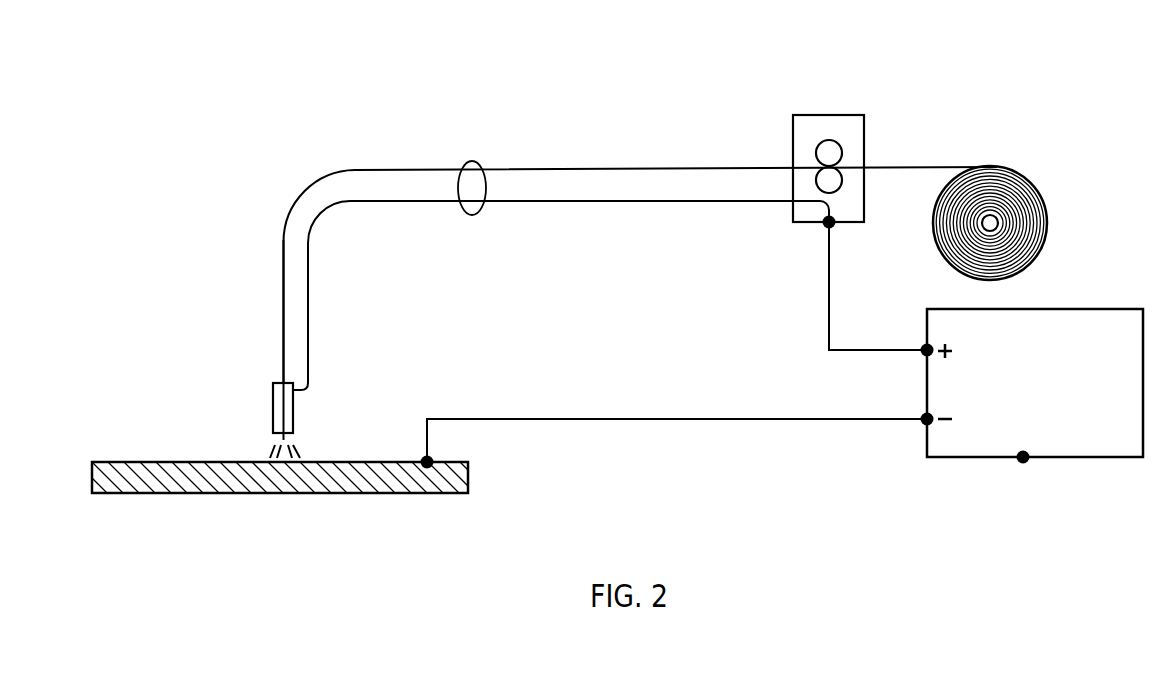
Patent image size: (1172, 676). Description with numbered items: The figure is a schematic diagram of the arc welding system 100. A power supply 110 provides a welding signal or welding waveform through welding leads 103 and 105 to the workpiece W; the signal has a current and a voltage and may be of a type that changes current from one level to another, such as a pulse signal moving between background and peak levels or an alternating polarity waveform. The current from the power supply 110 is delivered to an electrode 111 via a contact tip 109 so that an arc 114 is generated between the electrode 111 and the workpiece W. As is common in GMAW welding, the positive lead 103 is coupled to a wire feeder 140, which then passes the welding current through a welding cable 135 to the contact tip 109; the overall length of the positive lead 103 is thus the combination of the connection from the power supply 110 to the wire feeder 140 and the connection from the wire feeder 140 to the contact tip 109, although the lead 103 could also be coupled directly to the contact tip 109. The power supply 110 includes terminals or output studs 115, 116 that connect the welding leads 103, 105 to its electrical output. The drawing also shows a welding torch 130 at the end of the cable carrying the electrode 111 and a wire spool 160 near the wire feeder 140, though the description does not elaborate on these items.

The arc welding system 100 is at (653, 75).
The positive welding lead 103 is at (367, 201).
The welding lead 105 is at (750, 420).
The contact tip 109 is at (293, 408).
The power supply 110 is at (1092, 309).
The electrode 111 is at (283, 335).
The arc 114 is at (310, 444).
The output stud 115 is at (926, 347).
The output stud 116 is at (926, 421).
The welding torch 130 is at (252, 385).
The welding cable 135 is at (472, 161).
The wire feeder 140 is at (848, 115).
The wire spool 160 is at (1052, 171).
The workpiece W is at (420, 493).